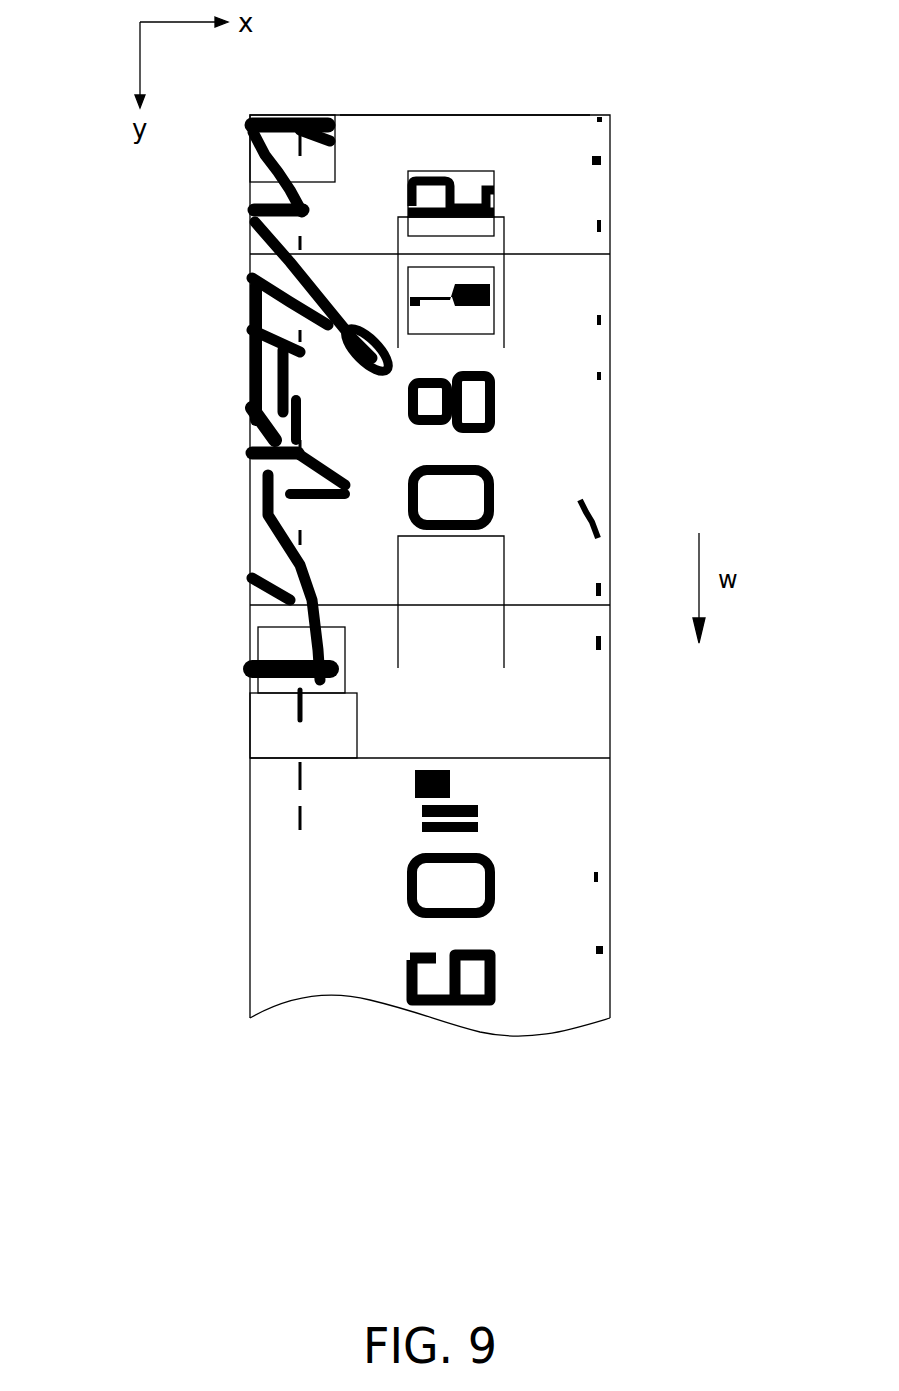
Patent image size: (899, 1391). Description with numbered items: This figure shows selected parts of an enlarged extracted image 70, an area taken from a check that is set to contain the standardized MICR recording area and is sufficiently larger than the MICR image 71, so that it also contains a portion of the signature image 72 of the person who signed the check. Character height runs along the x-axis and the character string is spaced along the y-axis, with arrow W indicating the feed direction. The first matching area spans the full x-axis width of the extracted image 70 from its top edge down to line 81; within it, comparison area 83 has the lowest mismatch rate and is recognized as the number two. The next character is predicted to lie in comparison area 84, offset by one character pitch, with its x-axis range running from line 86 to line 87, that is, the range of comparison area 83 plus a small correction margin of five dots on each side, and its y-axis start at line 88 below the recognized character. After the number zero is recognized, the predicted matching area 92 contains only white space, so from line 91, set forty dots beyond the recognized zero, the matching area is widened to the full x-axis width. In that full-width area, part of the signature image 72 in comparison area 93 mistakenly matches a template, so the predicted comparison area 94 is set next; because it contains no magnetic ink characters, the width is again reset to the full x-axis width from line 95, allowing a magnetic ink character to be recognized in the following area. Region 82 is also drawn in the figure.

The extracted image 70 is at (598, 114).
The MICR image 71 is at (525, 133).
The signature image 72 is at (275, 465).
The line 81 is at (560, 256).
The first block region 82 is at (287, 132).
The comparison area 83 is at (475, 185).
The comparison area 84 is at (475, 324).
The line 86 is at (396, 299).
The line 87 is at (504, 294).
The line 88 is at (502, 216).
The line 91 is at (560, 607).
The matching area 92 is at (475, 555).
The comparison area 93 is at (272, 640).
The comparison area 94 is at (272, 707).
The line 95 is at (560, 760).